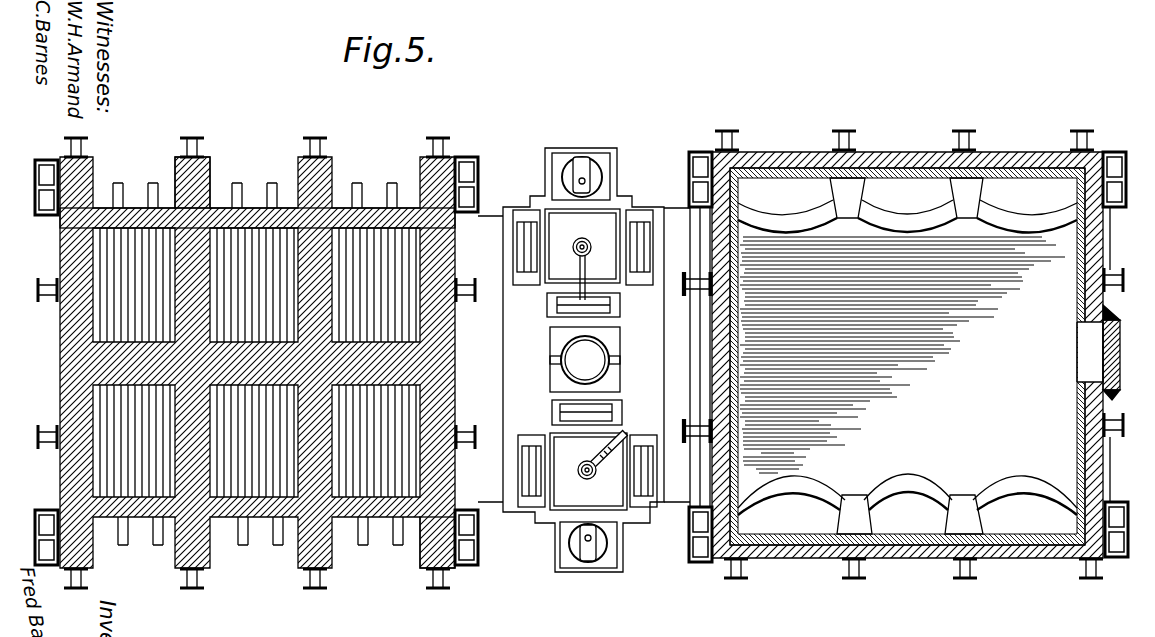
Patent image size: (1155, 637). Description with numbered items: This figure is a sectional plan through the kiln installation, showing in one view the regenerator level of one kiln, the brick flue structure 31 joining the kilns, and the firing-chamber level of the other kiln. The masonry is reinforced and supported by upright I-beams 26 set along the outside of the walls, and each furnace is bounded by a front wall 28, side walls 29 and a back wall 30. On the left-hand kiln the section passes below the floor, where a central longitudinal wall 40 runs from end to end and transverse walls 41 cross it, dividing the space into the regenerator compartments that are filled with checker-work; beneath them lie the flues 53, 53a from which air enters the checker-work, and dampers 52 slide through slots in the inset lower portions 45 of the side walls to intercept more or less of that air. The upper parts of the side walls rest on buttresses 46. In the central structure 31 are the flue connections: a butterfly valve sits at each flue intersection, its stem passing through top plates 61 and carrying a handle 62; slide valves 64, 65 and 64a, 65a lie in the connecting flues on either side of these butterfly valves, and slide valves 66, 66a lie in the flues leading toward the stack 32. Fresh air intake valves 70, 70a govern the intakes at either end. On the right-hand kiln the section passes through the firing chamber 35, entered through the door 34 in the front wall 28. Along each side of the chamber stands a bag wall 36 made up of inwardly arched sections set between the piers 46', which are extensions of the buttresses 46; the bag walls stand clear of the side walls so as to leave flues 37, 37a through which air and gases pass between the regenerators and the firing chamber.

The upright I-beams 26 is at (436, 590).
The front wall 28 is at (77, 398).
The side walls 29 is at (222, 213).
The back walls 30 is at (440, 413).
The brick structure 31 is at (538, 520).
The stack 32 is at (608, 345).
The door 34 is at (1100, 357).
The firing chamber 35 is at (902, 355).
The bag walls 36 is at (877, 218).
The flue 37 is at (1000, 197).
The flue 37a is at (1015, 503).
The central longitudinal wall 40 is at (190, 367).
The transverse walls 41 is at (190, 255).
The inset lower portions of side walls 45 is at (276, 546).
The buttresses 46 is at (416, 546).
The piers 46' is at (933, 355).
The dampers 52 is at (271, 188).
The flue below regenerator 53 is at (378, 258).
The flue below regenerator 53a is at (378, 480).
The top plates 61 is at (588, 471).
The handle 62 is at (620, 438).
The slide valve 64 is at (525, 228).
The slide valve 64a is at (535, 488).
The slide valve 65 is at (638, 228).
The slide valve 65a is at (645, 490).
The slide valve 66 is at (568, 302).
The slide valve 66a is at (575, 412).
The fresh air intake valve 70 is at (593, 175).
The fresh air intake valve 70a is at (578, 553).